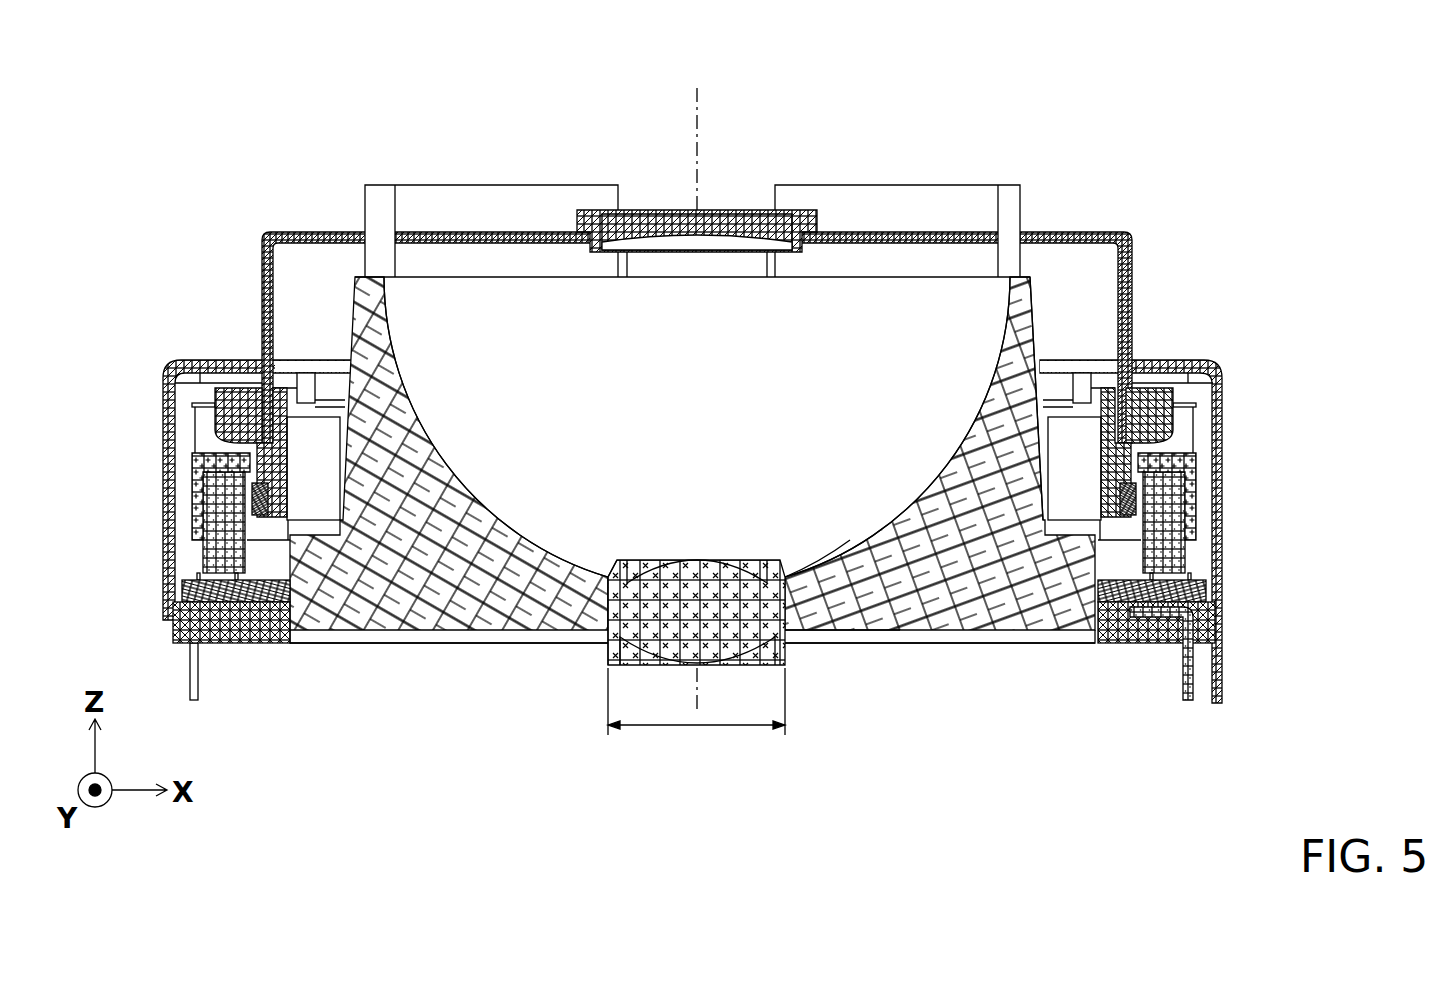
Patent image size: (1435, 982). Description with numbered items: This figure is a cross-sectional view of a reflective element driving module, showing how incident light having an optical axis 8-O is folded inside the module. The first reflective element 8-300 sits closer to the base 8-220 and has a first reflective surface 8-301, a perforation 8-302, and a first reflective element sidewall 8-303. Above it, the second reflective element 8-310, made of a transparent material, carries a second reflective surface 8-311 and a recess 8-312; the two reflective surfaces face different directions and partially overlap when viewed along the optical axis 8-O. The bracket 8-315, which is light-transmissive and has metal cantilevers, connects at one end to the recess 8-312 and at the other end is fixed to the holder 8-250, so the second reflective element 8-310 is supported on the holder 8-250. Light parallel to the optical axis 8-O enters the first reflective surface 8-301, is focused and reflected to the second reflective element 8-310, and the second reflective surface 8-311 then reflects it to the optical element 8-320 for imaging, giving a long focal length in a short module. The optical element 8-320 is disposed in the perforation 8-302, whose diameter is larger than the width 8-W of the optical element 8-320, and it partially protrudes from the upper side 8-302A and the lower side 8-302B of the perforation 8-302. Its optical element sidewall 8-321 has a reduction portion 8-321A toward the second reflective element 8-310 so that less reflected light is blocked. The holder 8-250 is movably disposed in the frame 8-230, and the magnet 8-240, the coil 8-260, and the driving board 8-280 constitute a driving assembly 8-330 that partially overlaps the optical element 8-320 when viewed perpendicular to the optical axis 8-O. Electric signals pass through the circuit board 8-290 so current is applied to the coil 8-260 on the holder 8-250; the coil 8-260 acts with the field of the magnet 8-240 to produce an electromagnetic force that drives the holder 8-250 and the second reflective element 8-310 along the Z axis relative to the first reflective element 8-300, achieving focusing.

The optical axis 8-O is at (691, 385).
The second reflective element 8-310 is at (750, 226).
The second reflective surface 8-311 is at (697, 242).
The recess 8-312 is at (578, 238).
The bracket 8-315 is at (1058, 232).
The first reflective element sidewall 8-303 is at (995, 365).
The first reflective surface 8-301 is at (898, 513).
The perforation 8-302 is at (930, 617).
The upper side of the perforation 8-302A is at (788, 575).
The lower side of the perforation 8-302B is at (798, 630).
The first reflective element 8-300 is at (1054, 598).
The optical element 8-320 is at (697, 574).
The optical element sidewall 8-321 is at (605, 608).
The reduction portion 8-321A is at (607, 572).
The width of the optical element 8-W is at (696, 716).
The holder 8-250 is at (1170, 403).
The frame 8-230 is at (1165, 463).
The coil 8-260 is at (1165, 505).
The magnet 8-240 is at (1165, 555).
The driving board 8-280 is at (1165, 591).
The base 8-220 is at (1200, 637).
The circuit board 8-290 is at (1197, 683).
The driving assembly 8-330 is at (805, 496).